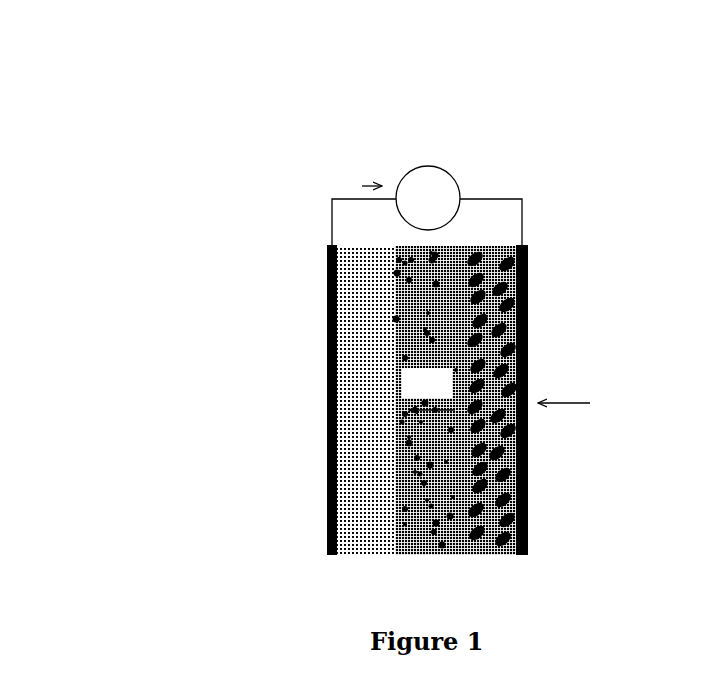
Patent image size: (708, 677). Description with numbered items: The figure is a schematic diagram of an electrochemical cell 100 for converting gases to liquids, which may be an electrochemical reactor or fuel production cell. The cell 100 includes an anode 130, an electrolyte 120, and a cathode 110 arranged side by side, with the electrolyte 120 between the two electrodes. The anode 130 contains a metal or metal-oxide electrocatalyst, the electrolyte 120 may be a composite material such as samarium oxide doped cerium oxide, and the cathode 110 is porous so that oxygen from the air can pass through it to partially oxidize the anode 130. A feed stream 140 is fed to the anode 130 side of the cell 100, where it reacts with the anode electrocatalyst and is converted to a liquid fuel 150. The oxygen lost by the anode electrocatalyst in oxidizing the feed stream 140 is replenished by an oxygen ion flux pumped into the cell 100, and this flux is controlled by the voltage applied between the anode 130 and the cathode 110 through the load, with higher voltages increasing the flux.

The electrochemical cell 100 is at (325, 313).
The cathode 110 is at (497, 558).
The electrolyte 120 is at (425, 559).
The anode 130 is at (378, 559).
The feed stream 140 is at (311, 465).
The liquid fuel 150 is at (313, 337).